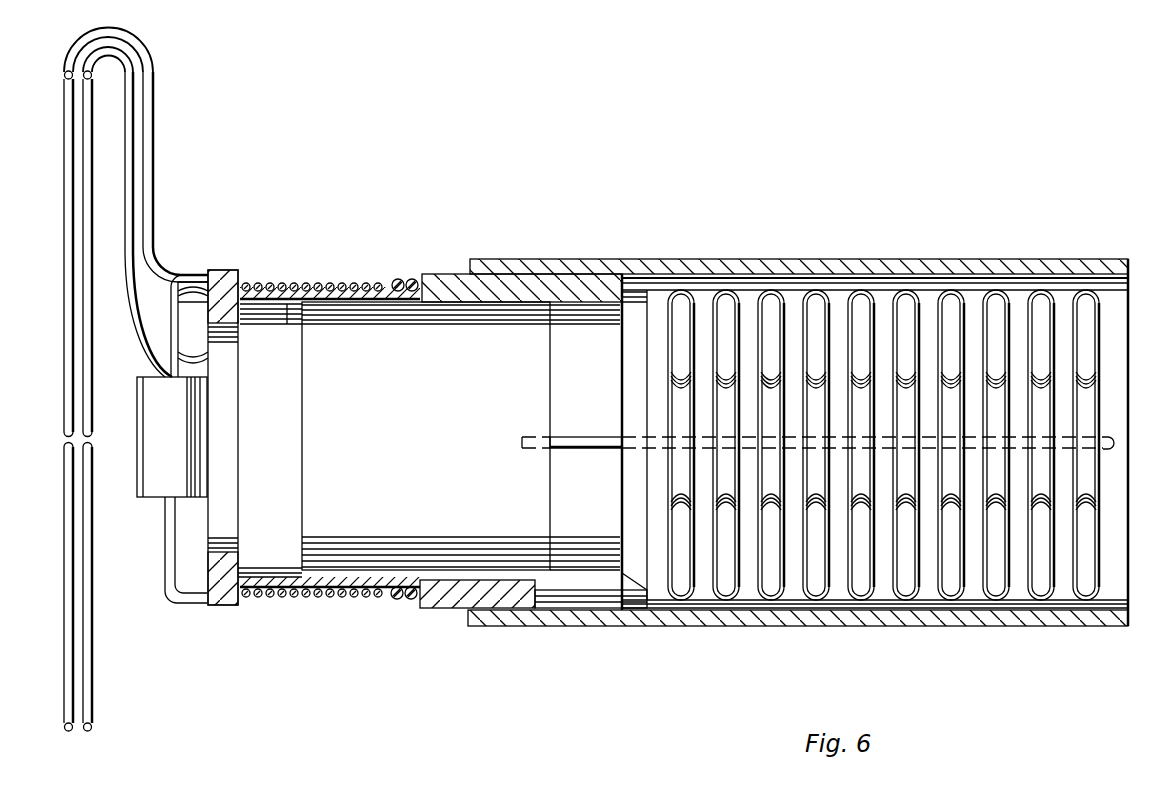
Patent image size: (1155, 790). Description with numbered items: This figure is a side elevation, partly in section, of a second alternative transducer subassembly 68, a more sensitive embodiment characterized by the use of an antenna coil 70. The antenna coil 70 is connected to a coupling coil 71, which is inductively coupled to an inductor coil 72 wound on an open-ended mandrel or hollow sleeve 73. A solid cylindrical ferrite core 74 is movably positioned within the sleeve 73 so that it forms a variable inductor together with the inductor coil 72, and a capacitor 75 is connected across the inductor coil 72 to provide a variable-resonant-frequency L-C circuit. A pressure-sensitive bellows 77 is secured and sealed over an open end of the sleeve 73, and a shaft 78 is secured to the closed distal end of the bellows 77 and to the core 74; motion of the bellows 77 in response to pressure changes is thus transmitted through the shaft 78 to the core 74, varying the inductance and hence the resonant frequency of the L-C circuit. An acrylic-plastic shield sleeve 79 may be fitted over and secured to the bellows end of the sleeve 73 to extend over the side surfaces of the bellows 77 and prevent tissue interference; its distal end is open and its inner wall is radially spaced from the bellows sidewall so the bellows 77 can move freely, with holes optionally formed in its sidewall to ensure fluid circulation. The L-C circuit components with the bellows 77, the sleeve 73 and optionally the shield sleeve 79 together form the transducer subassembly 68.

The transducer subassembly 68 is at (547, 243).
The antenna coil 70 is at (95, 639).
The coupling coil 71 is at (411, 279).
The inductor coil 72 is at (377, 284).
The hollow sleeve 73 is at (287, 320).
The ferrite core 74 is at (437, 441).
The capacitor 75 is at (146, 442).
The pressure-sensitive bellows 77 is at (907, 292).
The shaft 78 is at (578, 452).
The shield sleeve 79 is at (763, 260).